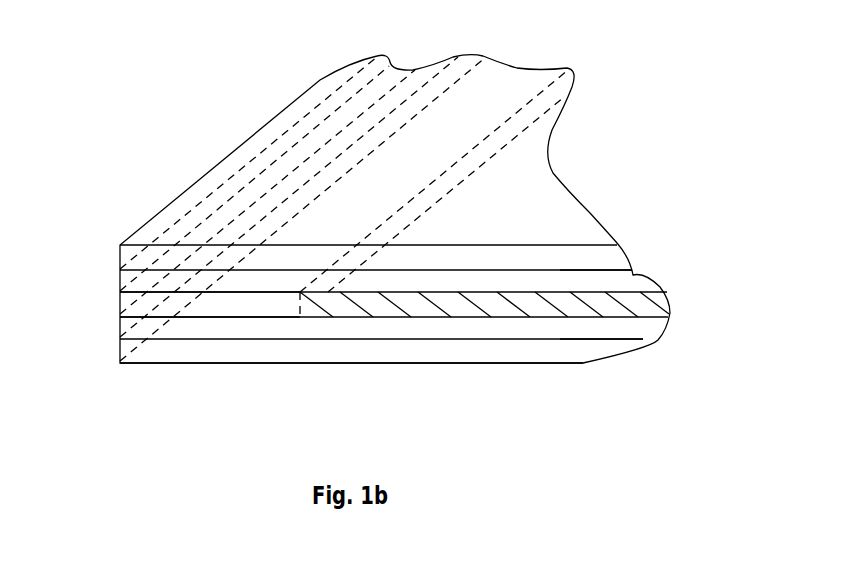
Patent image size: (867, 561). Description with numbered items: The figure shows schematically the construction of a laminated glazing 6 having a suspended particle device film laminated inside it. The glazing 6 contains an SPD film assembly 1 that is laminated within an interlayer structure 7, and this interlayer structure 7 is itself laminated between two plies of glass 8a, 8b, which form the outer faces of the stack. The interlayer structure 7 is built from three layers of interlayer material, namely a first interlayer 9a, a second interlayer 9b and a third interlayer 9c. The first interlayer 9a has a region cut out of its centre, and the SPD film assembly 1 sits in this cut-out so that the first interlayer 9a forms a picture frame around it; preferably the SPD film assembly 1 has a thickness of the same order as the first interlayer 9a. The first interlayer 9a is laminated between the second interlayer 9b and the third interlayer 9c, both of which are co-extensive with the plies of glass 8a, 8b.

The SPD film assembly 1 is at (690, 306).
The glazing 6 is at (615, 99).
The interlayer structure 7 is at (90, 275).
The ply of glass 8a is at (120, 255).
The ply of glass 8b is at (147, 353).
The first interlayer 9a is at (252, 303).
The second interlayer 9b is at (633, 278).
The third interlayer 9c is at (657, 327).